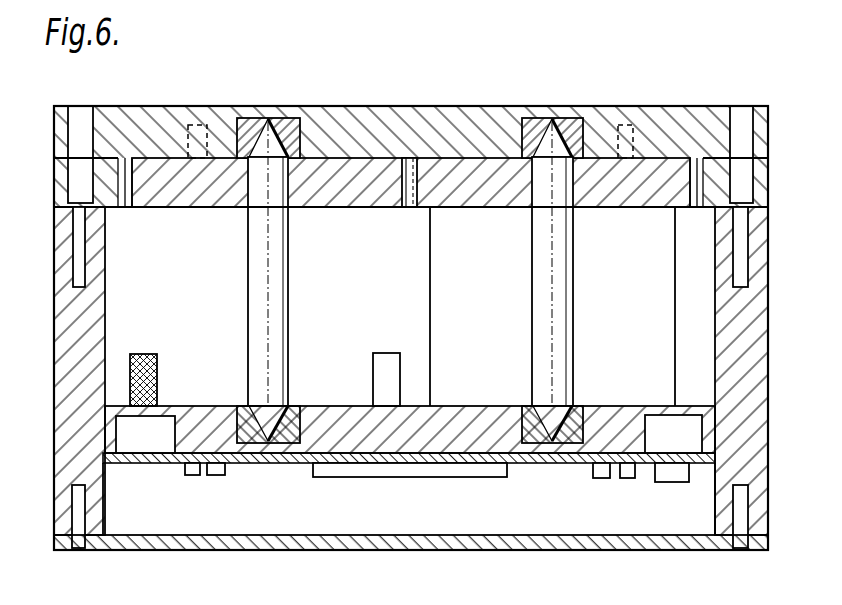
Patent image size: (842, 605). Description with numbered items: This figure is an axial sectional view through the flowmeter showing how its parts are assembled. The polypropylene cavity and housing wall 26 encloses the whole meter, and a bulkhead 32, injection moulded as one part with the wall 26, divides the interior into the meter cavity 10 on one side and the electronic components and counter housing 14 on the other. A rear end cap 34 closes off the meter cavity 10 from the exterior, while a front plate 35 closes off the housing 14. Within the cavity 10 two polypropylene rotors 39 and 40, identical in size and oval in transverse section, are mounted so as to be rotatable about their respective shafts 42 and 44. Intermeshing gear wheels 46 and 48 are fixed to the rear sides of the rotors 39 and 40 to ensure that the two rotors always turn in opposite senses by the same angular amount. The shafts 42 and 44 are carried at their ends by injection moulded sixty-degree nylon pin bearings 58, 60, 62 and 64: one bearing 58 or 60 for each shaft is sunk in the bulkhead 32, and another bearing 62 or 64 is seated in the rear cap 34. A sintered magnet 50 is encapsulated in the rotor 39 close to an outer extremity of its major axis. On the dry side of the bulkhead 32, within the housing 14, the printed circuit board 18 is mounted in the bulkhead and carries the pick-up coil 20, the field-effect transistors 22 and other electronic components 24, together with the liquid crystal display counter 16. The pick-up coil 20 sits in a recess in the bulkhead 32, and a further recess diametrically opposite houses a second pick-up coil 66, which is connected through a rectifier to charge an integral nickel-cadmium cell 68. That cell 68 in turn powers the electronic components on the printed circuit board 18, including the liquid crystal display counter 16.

The meter cavity 10 is at (393, 268).
The electronic components and counter housing 14 is at (380, 523).
The liquid crystal display counter 16 is at (467, 478).
The printed circuit board 18 is at (167, 463).
The pick-up coil 20 is at (144, 440).
The field effect transistors 22 is at (196, 476).
The electronic components 24 is at (226, 476).
The cavity and housing wall 26 is at (740, 308).
The bulkhead 32 is at (486, 412).
The rear end cap 34 is at (613, 125).
The front plate 35 is at (522, 548).
The rotor 39 is at (138, 242).
The rotor 40 is at (652, 230).
The shaft 42 is at (278, 318).
The shaft 44 is at (576, 340).
The gear wheel 46 is at (190, 170).
The gear wheel 48 is at (470, 167).
The sintered magnet 50 is at (150, 380).
The pin bearing 58 is at (265, 442).
The pin bearing 60 is at (567, 443).
The pin bearing 62 is at (283, 150).
The pin bearing 64 is at (572, 120).
The second pick-up coil 66 is at (660, 415).
The nickel-cadmium cell 68 is at (675, 482).